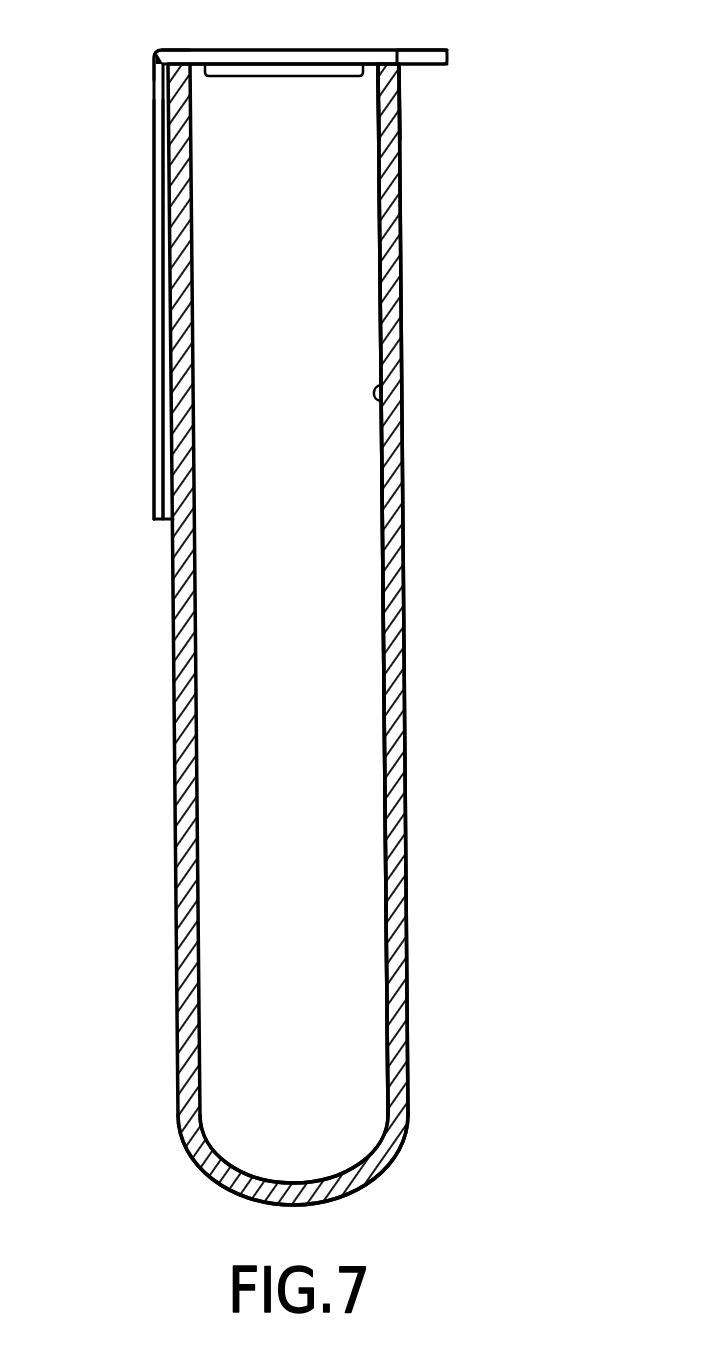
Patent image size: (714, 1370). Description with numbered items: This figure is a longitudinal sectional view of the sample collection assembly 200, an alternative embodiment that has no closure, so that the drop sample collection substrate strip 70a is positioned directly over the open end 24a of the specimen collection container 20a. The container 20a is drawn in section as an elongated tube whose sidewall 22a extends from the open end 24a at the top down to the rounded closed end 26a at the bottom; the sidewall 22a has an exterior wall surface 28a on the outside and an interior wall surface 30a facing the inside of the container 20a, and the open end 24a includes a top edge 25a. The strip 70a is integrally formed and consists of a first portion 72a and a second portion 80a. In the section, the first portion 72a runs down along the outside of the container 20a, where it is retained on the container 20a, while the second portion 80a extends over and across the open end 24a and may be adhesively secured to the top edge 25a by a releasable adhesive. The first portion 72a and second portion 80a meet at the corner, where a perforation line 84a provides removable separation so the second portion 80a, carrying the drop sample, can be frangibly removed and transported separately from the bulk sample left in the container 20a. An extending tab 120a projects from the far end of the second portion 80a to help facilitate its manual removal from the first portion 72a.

The sample collection assembly 200 is at (330, 606).
The specimen collection container 20a is at (368, 920).
The sidewall 22a is at (406, 595).
The open end 24a is at (393, 128).
The top edge 25a is at (398, 66).
The closed end 26a is at (378, 1168).
The exterior wall surface 28a is at (401, 338).
The interior wall surface 30a is at (384, 400).
The drop sample collection substrate strip 70a is at (151, 216).
The first portion 72a is at (157, 388).
The second portion 80a is at (185, 50).
The perforation line 84a is at (153, 63).
The extending tab 120a is at (437, 48).